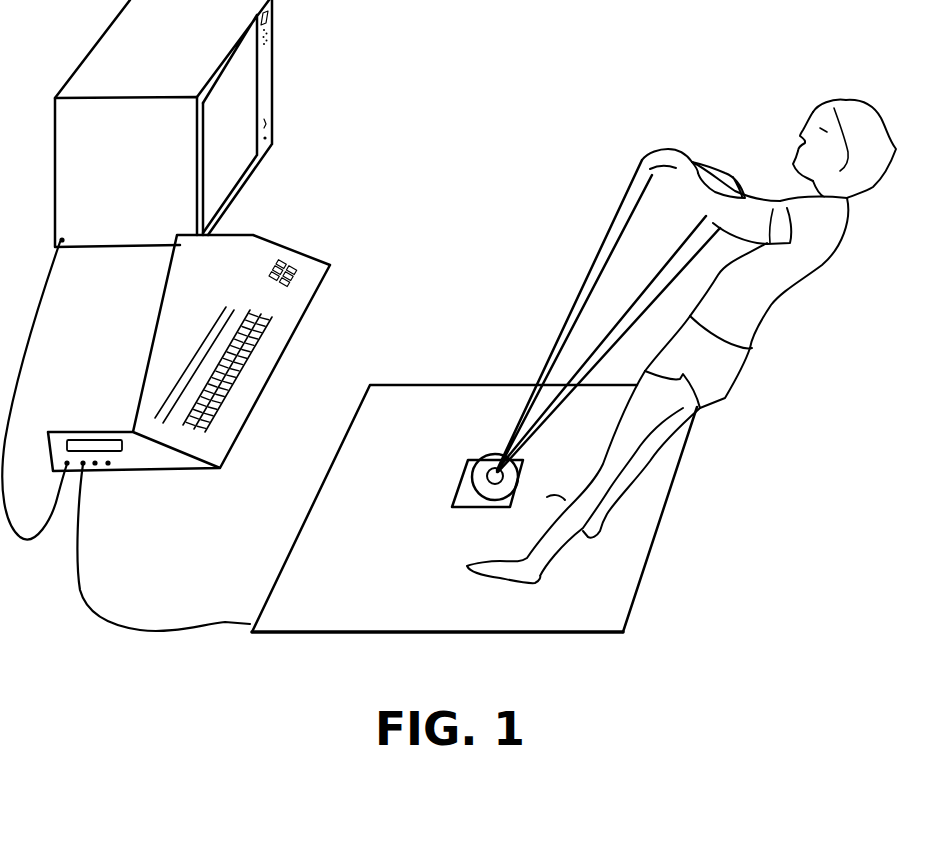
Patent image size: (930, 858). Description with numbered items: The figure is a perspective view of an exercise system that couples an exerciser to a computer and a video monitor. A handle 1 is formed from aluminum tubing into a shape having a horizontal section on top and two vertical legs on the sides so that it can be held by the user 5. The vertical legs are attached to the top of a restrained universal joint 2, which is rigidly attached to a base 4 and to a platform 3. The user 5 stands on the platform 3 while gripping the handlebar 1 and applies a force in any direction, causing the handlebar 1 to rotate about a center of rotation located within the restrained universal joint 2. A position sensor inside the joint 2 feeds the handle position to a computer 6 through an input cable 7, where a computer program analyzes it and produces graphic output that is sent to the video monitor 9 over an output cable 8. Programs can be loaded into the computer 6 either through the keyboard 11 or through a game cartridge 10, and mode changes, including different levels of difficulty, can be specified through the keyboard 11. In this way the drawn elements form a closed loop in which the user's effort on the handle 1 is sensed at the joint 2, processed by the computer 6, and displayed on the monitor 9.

The handle 1 is at (643, 160).
The restrained universal joint 2 is at (482, 458).
The platform 3 is at (306, 582).
The base 4 is at (453, 495).
The user 5 is at (789, 231).
The computer 6 is at (178, 353).
The input cable 7 is at (88, 601).
The output cable 8 is at (28, 348).
The video monitor 9 is at (163, 123).
The game cartridge 10 is at (67, 445).
The keyboard 11 is at (235, 372).